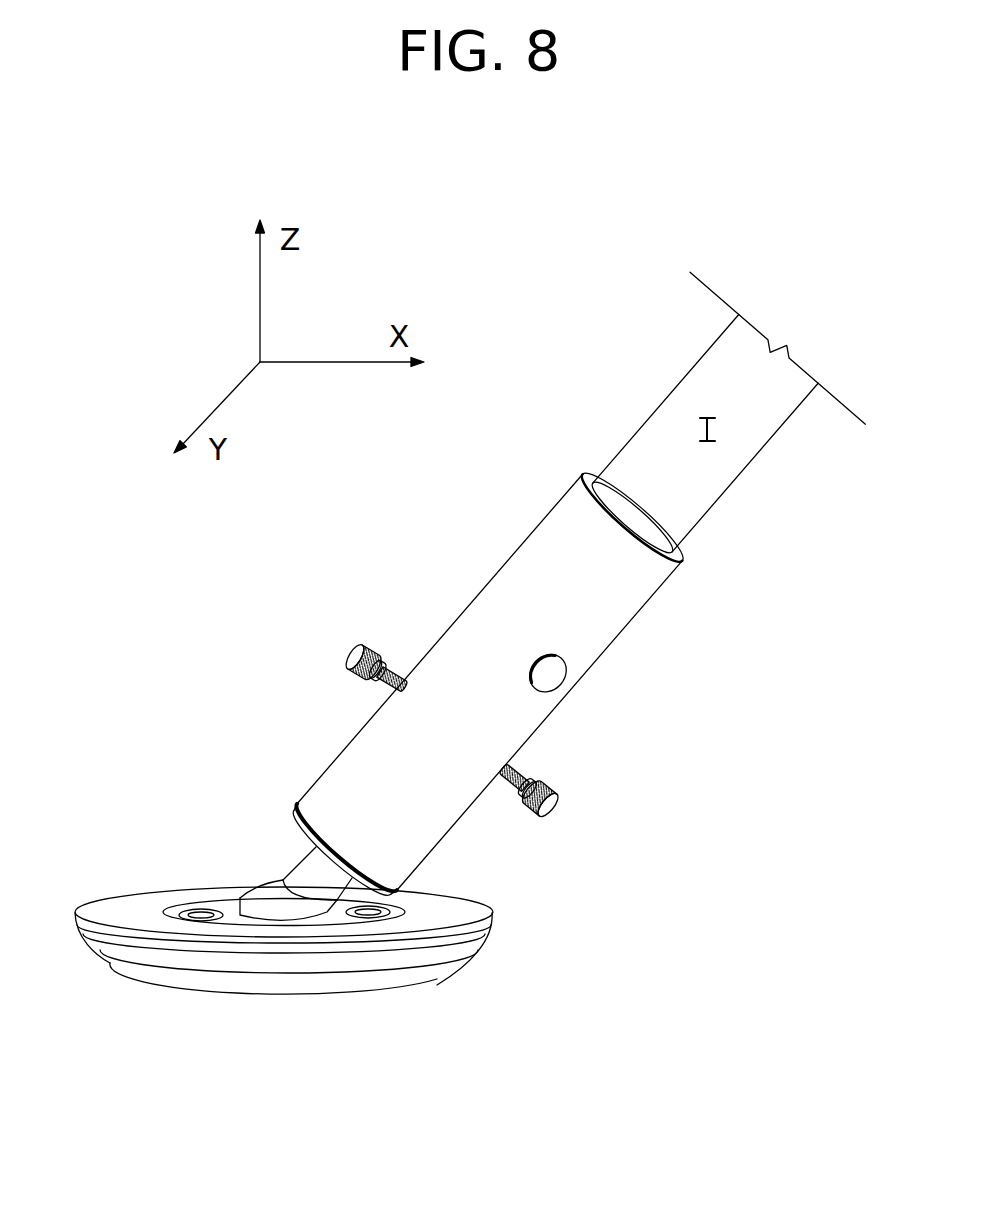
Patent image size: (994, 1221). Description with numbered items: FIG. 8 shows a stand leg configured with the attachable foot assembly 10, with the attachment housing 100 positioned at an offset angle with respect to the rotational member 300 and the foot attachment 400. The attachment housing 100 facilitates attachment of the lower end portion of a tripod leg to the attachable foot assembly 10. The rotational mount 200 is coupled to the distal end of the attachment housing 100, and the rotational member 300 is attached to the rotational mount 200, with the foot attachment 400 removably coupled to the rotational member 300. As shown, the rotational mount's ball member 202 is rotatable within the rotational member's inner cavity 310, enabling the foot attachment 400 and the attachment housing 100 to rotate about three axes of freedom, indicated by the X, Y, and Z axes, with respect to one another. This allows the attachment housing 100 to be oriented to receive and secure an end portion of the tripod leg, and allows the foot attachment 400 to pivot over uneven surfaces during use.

The attachable foot assembly 10 is at (340, 158).
The attachment housing 100 is at (477, 557).
The rotational mount 200 is at (270, 862).
The body member 202 is at (277, 893).
The rotational member 300 is at (195, 856).
The inner cavity 310 is at (281, 923).
The foot attachment 400 is at (452, 993).